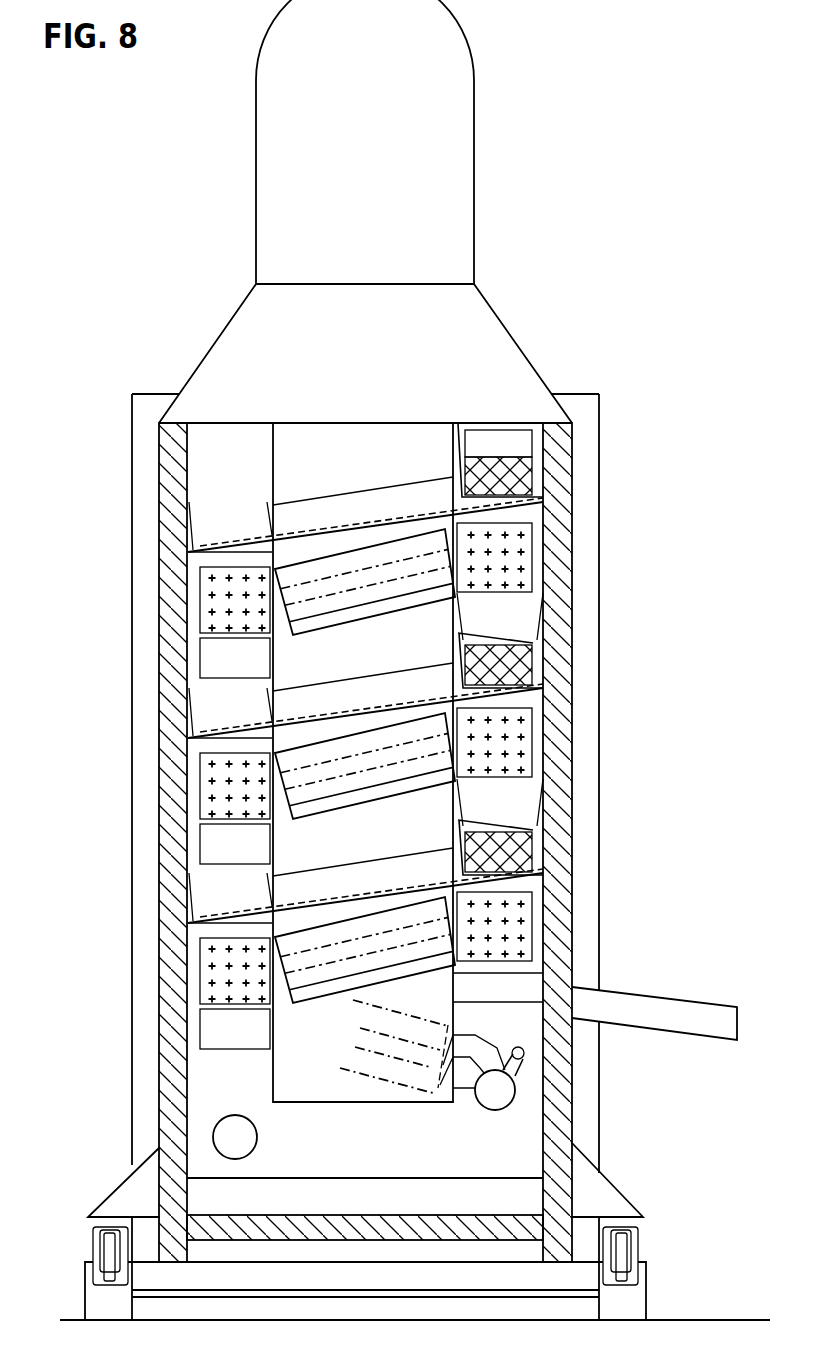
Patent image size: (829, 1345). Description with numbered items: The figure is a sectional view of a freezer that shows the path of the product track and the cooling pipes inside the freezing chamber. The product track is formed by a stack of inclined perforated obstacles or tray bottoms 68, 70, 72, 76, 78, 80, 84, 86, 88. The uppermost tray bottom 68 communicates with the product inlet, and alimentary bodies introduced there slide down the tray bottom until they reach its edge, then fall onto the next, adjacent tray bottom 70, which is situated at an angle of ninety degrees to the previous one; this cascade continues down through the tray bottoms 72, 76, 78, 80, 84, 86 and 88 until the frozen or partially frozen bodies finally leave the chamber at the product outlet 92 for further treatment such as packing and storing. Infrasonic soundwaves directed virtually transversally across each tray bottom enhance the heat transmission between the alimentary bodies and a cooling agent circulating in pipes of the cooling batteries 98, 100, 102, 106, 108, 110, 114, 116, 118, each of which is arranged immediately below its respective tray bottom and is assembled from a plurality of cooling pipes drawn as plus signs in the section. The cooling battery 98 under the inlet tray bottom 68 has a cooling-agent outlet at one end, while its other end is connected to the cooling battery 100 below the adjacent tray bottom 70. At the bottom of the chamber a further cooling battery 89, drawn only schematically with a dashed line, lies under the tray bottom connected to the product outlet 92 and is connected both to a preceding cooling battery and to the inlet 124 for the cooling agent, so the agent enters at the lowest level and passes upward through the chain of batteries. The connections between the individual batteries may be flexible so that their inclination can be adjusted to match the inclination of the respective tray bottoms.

The uppermost tray bottom 68 is at (517, 480).
The tray bottom 70 is at (388, 520).
The tray bottom 72 is at (226, 534).
The tray bottom 76 is at (512, 662).
The tray bottom 78 is at (392, 705).
The tray bottom 80 is at (205, 724).
The tray bottom 84 is at (517, 850).
The tray bottom 86 is at (380, 893).
The tray bottom 88 is at (205, 917).
The cooling battery 89 is at (383, 1063).
The product outlet 92 is at (650, 1008).
The cooling battery 98 is at (517, 558).
The cooling battery 100 is at (332, 570).
The cooling battery 102 is at (207, 609).
The cooling battery 106 is at (517, 742).
The cooling battery 108 is at (328, 757).
The cooling battery 110 is at (217, 792).
The cooling battery 114 is at (517, 930).
The cooling battery 116 is at (325, 947).
The cooling battery 118 is at (213, 965).
The inlet for a cooling agent 124 is at (497, 1100).